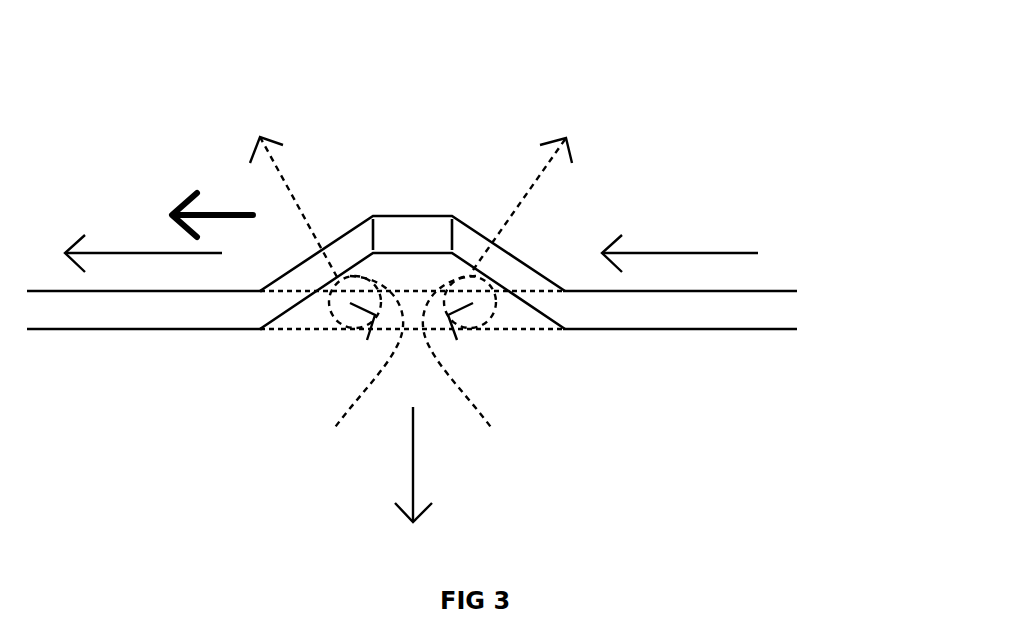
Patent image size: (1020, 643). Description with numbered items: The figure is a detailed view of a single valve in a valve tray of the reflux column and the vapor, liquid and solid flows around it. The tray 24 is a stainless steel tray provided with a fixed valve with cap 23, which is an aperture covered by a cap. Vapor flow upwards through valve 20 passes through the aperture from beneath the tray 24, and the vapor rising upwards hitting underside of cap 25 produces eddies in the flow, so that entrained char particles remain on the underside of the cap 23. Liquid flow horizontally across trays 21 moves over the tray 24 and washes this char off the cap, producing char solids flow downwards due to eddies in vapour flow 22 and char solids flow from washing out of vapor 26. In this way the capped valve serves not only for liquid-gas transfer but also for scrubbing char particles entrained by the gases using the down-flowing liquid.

The vapor flow upwards through valve 20 is at (293, 199).
The liquid flow horizontally across trays 21 is at (113, 253).
The char solids flow downwards due to eddies in vapour flow 22 is at (413, 477).
The fixed valve with cap 23 is at (451, 216).
The tray 24 is at (107, 329).
The vapor rising upwards hitting underside of cap-causing eddies in flow 25 is at (467, 393).
The char solids flow from washing out of vapor 26 is at (238, 211).